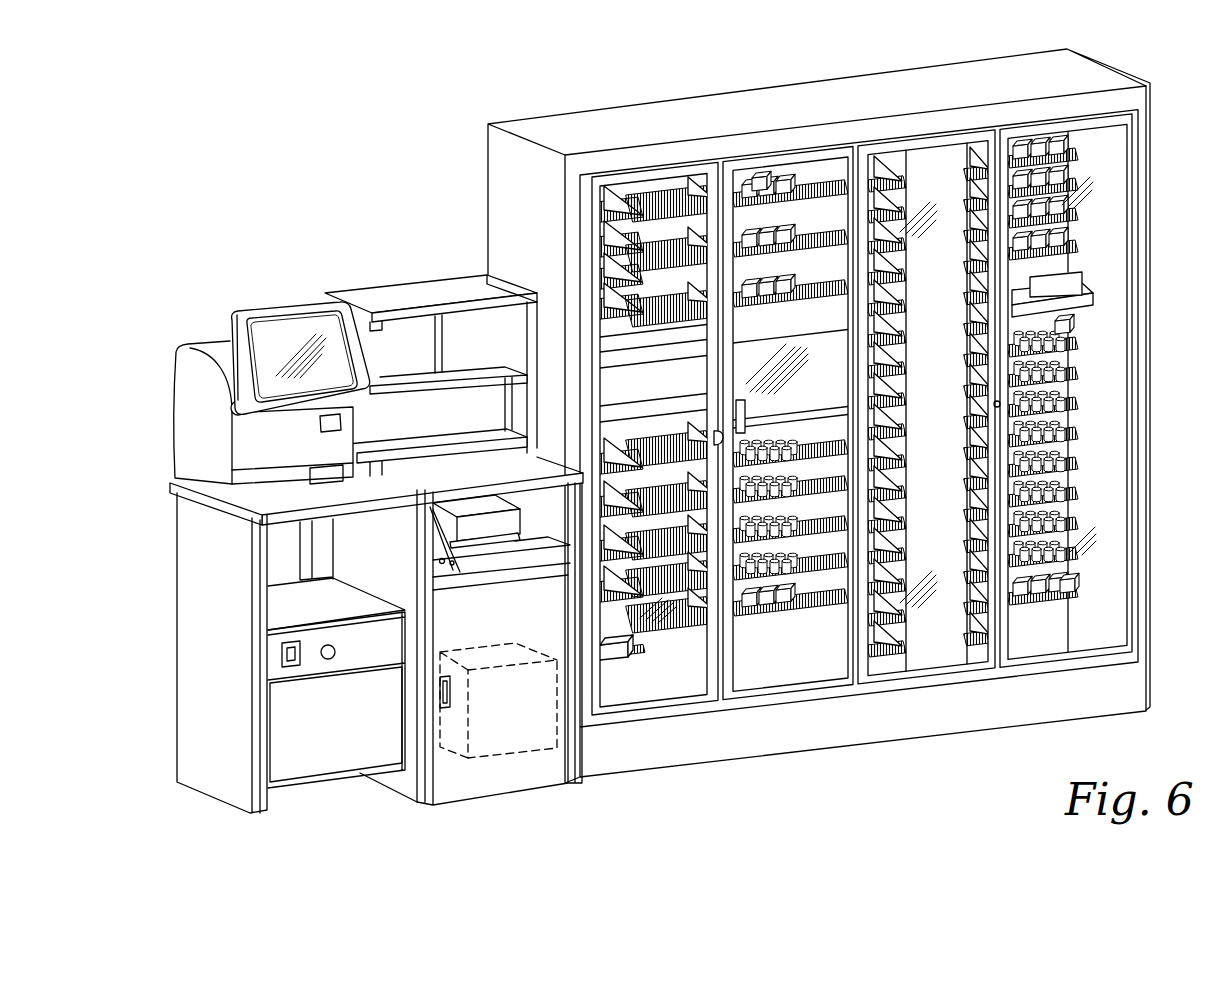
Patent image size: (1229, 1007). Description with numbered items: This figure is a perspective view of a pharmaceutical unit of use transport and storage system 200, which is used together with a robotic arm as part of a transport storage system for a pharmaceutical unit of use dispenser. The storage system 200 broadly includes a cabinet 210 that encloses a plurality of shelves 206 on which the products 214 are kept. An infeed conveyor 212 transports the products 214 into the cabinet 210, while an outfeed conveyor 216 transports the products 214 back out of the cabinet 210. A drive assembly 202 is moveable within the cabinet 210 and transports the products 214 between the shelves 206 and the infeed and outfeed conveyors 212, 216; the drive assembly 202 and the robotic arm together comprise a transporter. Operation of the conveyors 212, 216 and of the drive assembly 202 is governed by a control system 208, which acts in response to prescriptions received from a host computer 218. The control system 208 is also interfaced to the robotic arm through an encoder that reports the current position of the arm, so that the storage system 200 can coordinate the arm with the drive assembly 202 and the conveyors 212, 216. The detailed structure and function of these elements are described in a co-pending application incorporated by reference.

The storage system 200 is at (592, 60).
The drive assembly 202 is at (978, 306).
The shelves 206 is at (593, 243).
The control system 208 is at (146, 384).
The cabinet 210 is at (457, 146).
The infeed conveyor 212 is at (660, 358).
The products 214 is at (780, 172).
The outfeed conveyor 216 is at (742, 413).
The host computer 218 is at (188, 454).